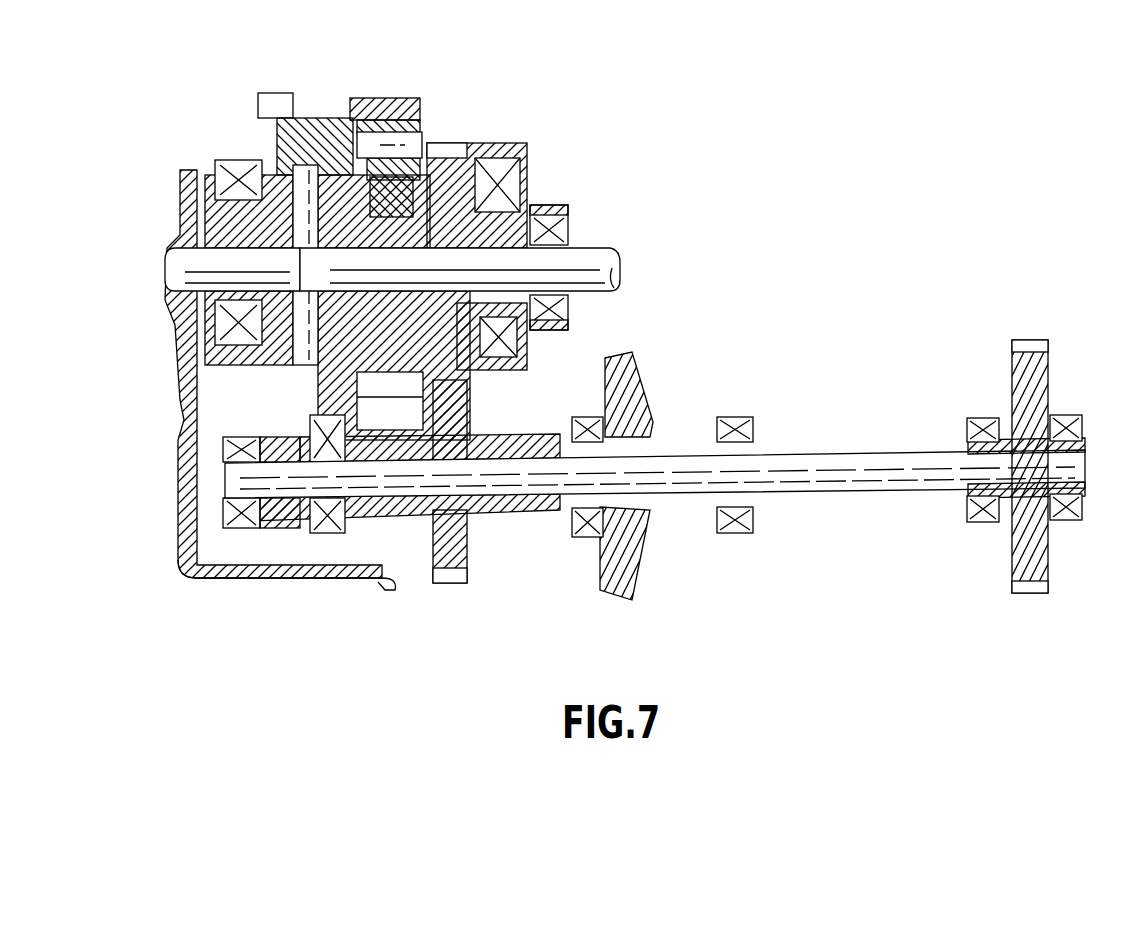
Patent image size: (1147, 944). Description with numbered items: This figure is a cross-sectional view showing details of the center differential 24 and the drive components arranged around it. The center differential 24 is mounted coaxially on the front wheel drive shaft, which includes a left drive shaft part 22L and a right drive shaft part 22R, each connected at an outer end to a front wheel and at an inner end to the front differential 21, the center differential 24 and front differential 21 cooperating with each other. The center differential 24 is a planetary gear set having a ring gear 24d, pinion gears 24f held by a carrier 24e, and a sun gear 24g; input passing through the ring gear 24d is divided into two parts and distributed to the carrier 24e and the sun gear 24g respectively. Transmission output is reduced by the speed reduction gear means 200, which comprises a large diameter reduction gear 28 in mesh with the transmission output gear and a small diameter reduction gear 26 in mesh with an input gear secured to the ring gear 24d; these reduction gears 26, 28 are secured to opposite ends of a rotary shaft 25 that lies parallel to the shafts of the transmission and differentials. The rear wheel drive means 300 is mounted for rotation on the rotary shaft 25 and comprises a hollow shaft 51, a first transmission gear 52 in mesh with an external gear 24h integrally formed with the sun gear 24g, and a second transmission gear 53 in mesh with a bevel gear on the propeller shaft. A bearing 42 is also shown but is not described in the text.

The front differential 21 is at (267, 178).
The left drive shaft part 22L is at (162, 266).
The right drive shaft part 22R is at (597, 245).
The center differential 24 is at (440, 105).
The ring gear 24d is at (397, 98).
The carrier 24e is at (350, 102).
The pinion gears 24f is at (410, 127).
The sun gear 24g is at (373, 98).
The external gear 24h is at (470, 372).
The rotary shaft 25 is at (888, 495).
The small diameter reduction gear 26 is at (281, 532).
The large diameter reduction gear 28 is at (1050, 360).
The bearing 42 is at (262, 430).
The hollow shaft 51 is at (523, 505).
The first transmission gear 52 is at (462, 413).
The second transmission gear 53 is at (648, 572).
The speed reduction gear means 200 is at (830, 503).
The rear wheel drive means 300 is at (491, 557).